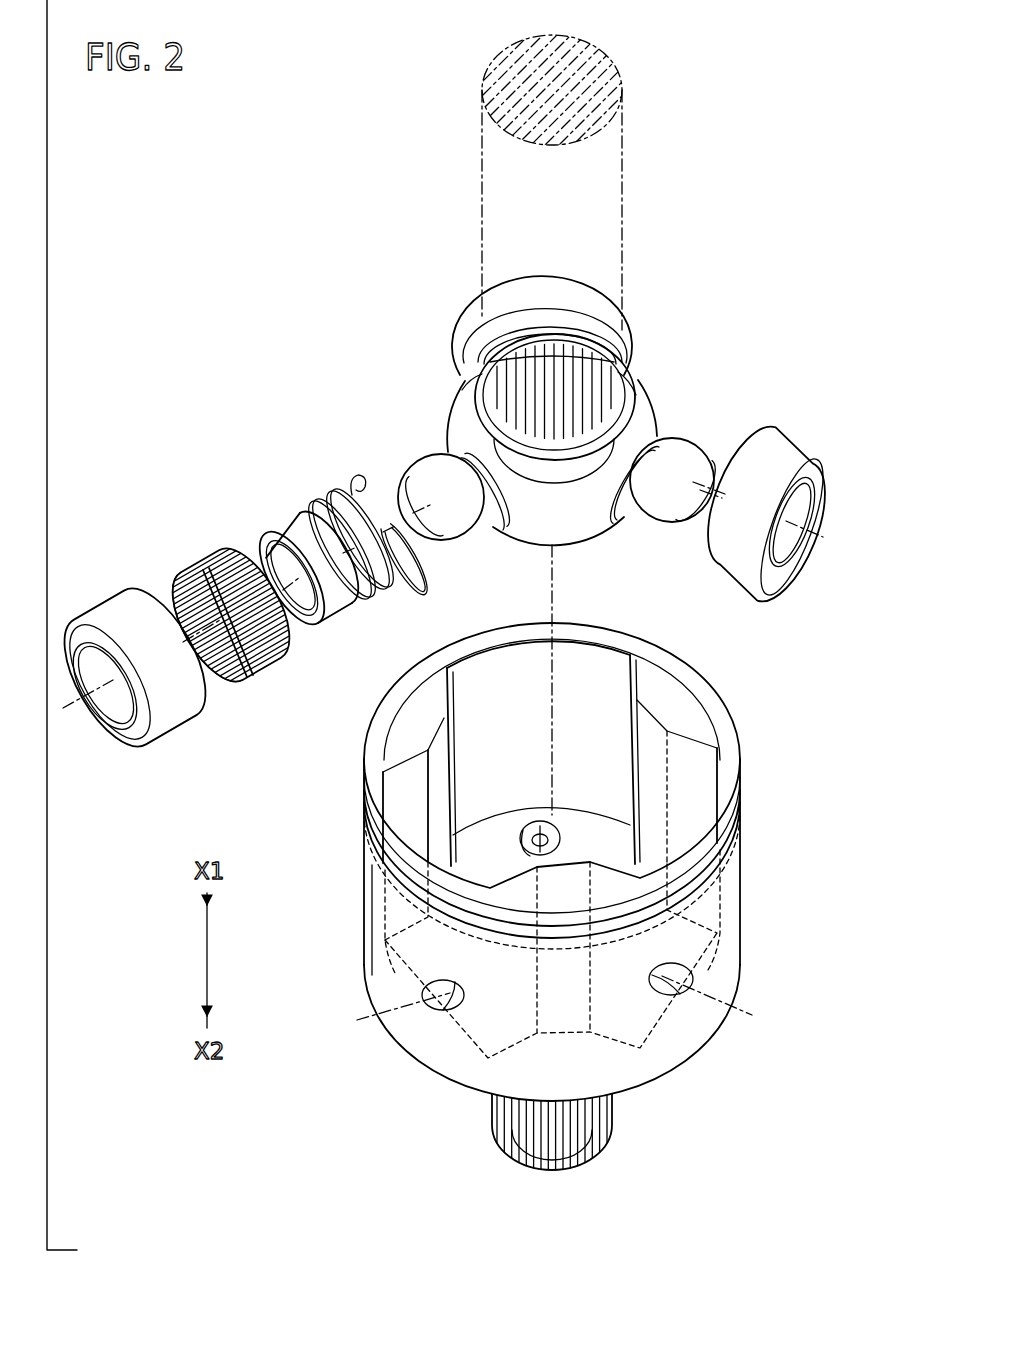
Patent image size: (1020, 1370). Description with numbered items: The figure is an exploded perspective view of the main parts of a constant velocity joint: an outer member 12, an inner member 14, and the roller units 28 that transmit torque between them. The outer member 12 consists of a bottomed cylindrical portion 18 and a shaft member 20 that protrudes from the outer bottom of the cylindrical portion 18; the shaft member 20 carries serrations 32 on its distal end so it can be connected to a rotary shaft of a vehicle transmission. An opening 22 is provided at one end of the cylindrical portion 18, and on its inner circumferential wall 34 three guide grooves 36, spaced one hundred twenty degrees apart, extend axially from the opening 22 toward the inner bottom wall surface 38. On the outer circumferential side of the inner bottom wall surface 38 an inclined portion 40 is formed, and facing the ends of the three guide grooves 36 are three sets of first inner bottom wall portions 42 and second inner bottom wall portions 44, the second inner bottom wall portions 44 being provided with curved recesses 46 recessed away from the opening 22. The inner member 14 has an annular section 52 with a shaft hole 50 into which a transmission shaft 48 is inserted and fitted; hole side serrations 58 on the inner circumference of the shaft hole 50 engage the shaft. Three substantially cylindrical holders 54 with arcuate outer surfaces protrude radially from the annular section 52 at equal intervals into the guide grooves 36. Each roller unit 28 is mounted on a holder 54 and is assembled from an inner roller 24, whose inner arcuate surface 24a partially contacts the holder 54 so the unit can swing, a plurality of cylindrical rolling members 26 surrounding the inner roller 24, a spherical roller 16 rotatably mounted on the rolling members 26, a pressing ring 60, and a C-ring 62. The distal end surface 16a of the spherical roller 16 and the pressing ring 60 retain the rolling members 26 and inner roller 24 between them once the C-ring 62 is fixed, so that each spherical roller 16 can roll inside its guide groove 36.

The outer member 12 is at (553, 900).
The inner member 14 is at (558, 454).
The spherical roller 16 is at (445, 513).
The distal end surface 16a is at (130, 735).
The cylindrical portion 18 is at (650, 1075).
The shaft member 20 is at (551, 1151).
The opening 22 is at (650, 727).
The inner roller 24 is at (297, 552).
The arcuate surface 24a is at (272, 545).
The rolling member 26 is at (205, 560).
The roller unit 28 is at (580, 270).
The serrations 32 is at (520, 1158).
The inner circumferential wall 34 is at (440, 735).
The guide groove 36 is at (607, 660).
The inner bottom wall surface 38 is at (484, 832).
The inclined portion 40 is at (585, 826).
The first inner bottom wall portion 42 is at (553, 937).
The second inner bottom wall portion 44 is at (553, 888).
The recess 46 is at (541, 835).
The transmission shaft 48 is at (624, 135).
The shaft hole 50 is at (565, 365).
The annular section 52 is at (520, 525).
The holder 54 is at (425, 478).
The hole side serrations 58 is at (525, 372).
The pressing ring 60 is at (375, 600).
The C-ring 62 is at (408, 596).